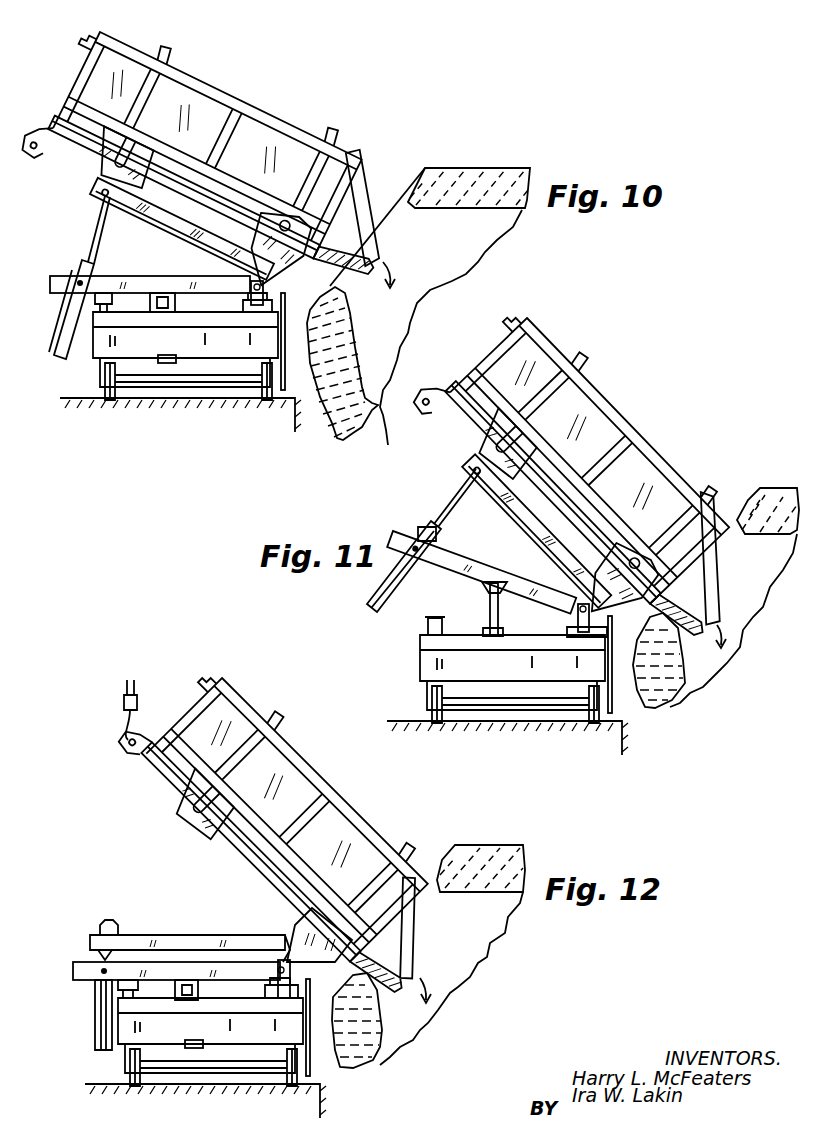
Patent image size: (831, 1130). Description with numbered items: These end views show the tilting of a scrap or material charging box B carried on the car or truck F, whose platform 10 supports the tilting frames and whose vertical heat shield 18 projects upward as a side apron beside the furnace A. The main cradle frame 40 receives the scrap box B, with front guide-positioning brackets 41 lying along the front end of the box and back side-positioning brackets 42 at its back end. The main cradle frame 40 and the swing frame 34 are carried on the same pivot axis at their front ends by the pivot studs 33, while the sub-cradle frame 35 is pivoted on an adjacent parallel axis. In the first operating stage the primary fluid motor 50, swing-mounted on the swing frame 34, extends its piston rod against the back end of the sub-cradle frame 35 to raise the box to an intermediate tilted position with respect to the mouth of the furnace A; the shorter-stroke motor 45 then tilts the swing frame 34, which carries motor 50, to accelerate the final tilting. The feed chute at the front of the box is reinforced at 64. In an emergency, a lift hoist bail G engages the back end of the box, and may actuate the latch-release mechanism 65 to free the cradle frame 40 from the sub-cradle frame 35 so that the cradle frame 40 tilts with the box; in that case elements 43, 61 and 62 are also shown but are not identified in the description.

In FIG. 10, the platform 10 is at (225, 351).
In FIG. 11, the platform 10 is at (568, 681).
In FIG. 12, the platform 10 is at (265, 1042).
In FIG. 10, the vertical heat shield 18 is at (285, 350).
In FIG. 11, the vertical heat shield 18 is at (625, 664).
In FIG. 12, the vertical heat shield 18 is at (309, 1040).
In FIG. 10, the pivot studs 33 is at (248, 290).
In FIG. 12, the pivot studs 33 is at (292, 968).
In FIG. 10, the swing frame 34 is at (170, 276).
In FIG. 11, the swing frame 34 is at (462, 556).
In FIG. 12, the swing frame 34 is at (73, 966).
In FIG. 10, the sub-cradle frame 35 is at (166, 212).
In FIG. 11, the sub-cradle frame 35 is at (522, 505).
In FIG. 12, the sub-cradle frame 35 is at (200, 935).
In FIG. 10, the main cradle frame 40 is at (98, 156).
In FIG. 12, the main cradle frame 40 is at (232, 840).
In FIG. 10, the front guide-positioning brackets 41 is at (283, 256).
In FIG. 12, the front guide-positioning brackets 41 is at (296, 924).
In FIG. 12, the back side-positioning brackets 42 is at (195, 816).
In FIG. 12, the roller 43 is at (113, 922).
In FIG. 10, the motor 45 is at (176, 361).
In FIG. 11, the motor 45 is at (498, 637).
In FIG. 12, the motor 45 is at (200, 1046).
In FIG. 10, the primary fluid motor 50 is at (56, 347).
In FIG. 11, the primary fluid motor 50 is at (378, 592).
In FIG. 12, the primary fluid motor 50 is at (95, 1010).
In FIG. 10, the hook 61 is at (84, 40).
In FIG. 11, the hook 61 is at (505, 326).
In FIG. 12, the hook 61 is at (200, 686).
In FIG. 10, the pin 62 is at (167, 50).
In FIG. 11, the pin 62 is at (586, 358).
In FIG. 12, the pin 62 is at (280, 714).
In FIG. 10, the feed chute reinforcement 64 is at (384, 252).
In FIG. 11, the feed chute reinforcement 64 is at (718, 590).
In FIG. 12, the feed chute reinforcement 64 is at (416, 936).
In FIG. 10, the latch-release mechanism 65 is at (44, 160).
In FIG. 12, the latch-release mechanism 65 is at (120, 750).
In FIG. 10, the furnace A is at (497, 168).
In FIG. 11, the furnace A is at (785, 488).
In FIG. 12, the furnace A is at (503, 846).
In FIG. 10, the scrap box B is at (210, 84).
In FIG. 11, the scrap box B is at (625, 418).
In FIG. 12, the scrap box B is at (313, 772).
In FIG. 10, the car or truck F is at (146, 400).
In FIG. 11, the car or truck F is at (507, 740).
In FIG. 12, the car or truck F is at (180, 1085).
In FIG. 12, the lift hoist bail G is at (137, 696).